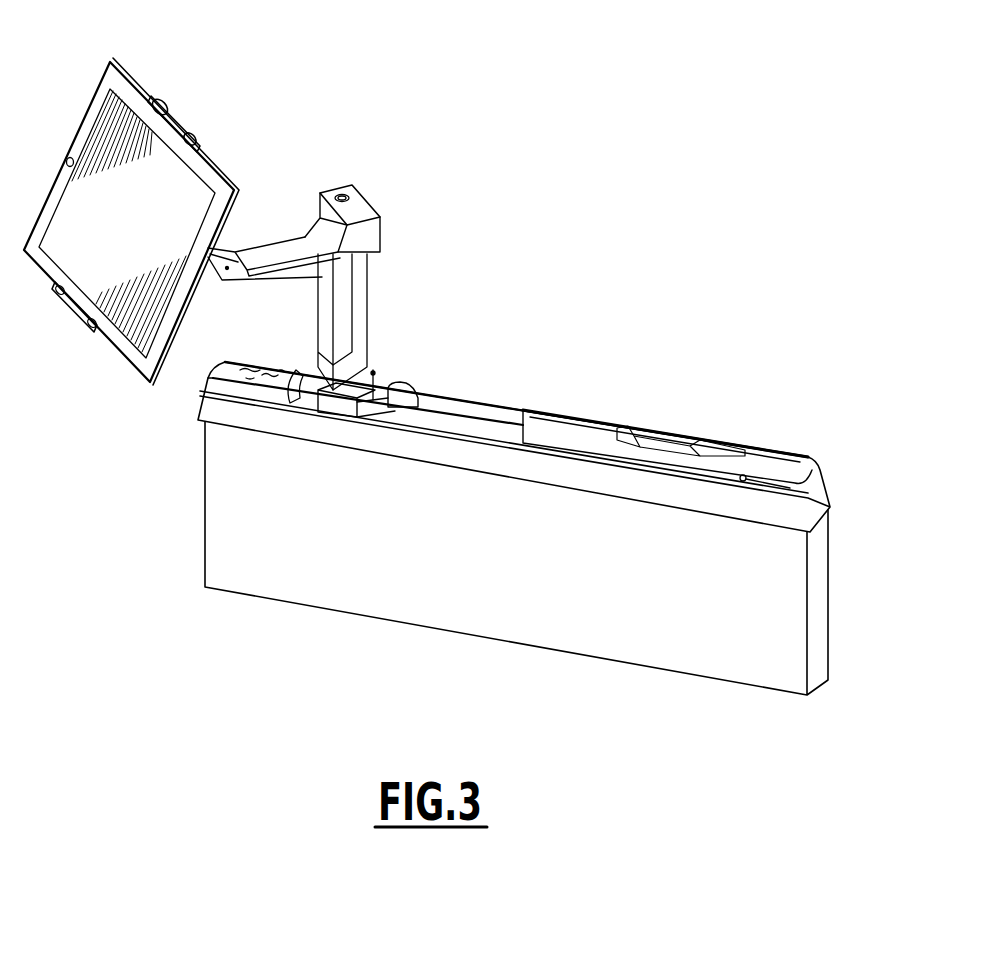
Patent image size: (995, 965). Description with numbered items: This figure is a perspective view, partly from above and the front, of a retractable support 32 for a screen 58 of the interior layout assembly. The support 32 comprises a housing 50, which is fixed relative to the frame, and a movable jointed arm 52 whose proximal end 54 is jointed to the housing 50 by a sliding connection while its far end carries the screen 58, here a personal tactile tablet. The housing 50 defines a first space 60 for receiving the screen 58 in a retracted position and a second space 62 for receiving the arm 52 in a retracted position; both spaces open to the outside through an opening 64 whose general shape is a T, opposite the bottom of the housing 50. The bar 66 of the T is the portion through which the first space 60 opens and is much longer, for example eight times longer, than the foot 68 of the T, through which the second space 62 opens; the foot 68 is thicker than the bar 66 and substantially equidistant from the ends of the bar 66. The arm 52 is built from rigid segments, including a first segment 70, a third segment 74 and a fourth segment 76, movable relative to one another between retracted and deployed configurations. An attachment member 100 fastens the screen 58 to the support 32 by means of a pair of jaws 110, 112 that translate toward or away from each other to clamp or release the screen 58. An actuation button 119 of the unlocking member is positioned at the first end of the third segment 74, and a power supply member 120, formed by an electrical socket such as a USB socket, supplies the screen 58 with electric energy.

The retractable support 32 is at (461, 527).
The housing 50 is at (222, 570).
The arm 52 is at (345, 308).
The proximal end 54 is at (375, 388).
The screen 58 is at (123, 82).
The first space 60 is at (468, 426).
The second space 62 is at (390, 412).
The opening 64 is at (289, 386).
The bar of the T 66 is at (431, 417).
The foot of the T 68 is at (411, 378).
The first segment 70 is at (275, 240).
The third segment 74 is at (309, 302).
The fourth segment 76 is at (374, 369).
The attachment member 100 is at (176, 237).
The jaw 110 is at (165, 100).
The jaw 112 is at (96, 338).
The actuation button 119 is at (341, 187).
The power supply member 120 is at (242, 364).